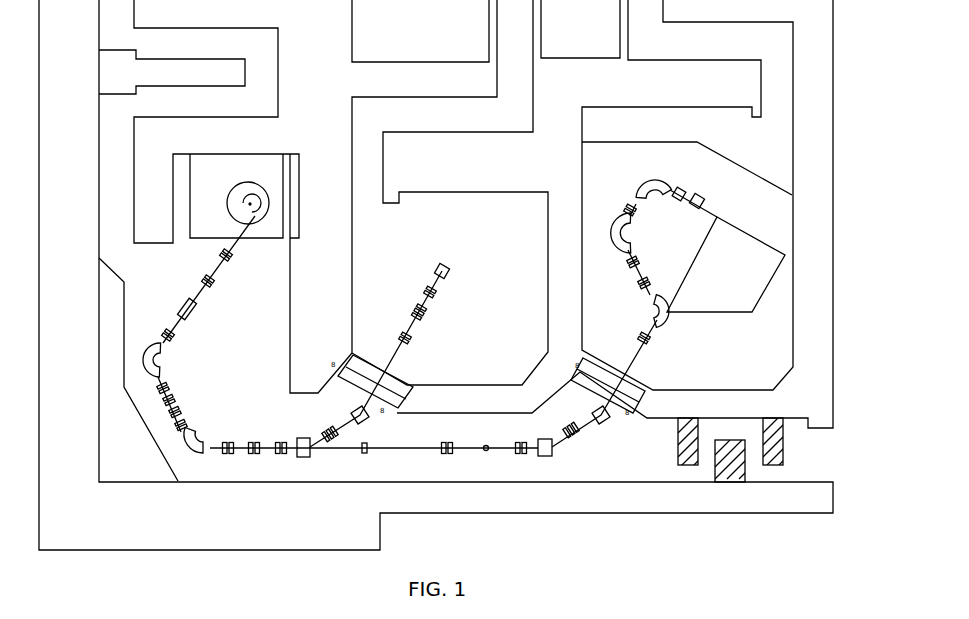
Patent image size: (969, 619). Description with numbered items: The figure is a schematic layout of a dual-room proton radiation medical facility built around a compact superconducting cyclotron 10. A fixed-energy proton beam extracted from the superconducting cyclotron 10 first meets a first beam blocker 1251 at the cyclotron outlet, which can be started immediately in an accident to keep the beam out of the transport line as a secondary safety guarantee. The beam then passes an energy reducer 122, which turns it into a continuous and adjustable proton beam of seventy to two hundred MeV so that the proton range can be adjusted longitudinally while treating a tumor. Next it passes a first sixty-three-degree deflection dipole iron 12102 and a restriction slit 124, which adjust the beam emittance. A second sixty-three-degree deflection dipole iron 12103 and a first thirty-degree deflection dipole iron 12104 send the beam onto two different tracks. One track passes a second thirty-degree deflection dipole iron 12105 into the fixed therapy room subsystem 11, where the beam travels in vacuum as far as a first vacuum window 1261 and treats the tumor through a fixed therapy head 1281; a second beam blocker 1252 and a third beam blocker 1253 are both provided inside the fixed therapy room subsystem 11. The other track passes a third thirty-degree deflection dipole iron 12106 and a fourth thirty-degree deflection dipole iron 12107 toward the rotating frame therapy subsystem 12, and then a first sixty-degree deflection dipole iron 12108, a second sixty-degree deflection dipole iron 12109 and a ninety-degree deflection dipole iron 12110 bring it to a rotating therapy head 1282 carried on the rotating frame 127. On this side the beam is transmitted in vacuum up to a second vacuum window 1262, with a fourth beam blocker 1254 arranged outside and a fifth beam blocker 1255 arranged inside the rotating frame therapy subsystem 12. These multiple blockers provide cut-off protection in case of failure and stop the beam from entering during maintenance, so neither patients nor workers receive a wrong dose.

The superconducting cyclotron 10 is at (240, 188).
The fixed therapy room subsystem 11 is at (443, 200).
The rotating frame therapy subsystem 12 is at (752, 200).
The energy reducer 122 is at (180, 310).
The restriction slit 124 is at (176, 405).
The rotating frame 127 is at (723, 315).
The first beam blocker 1251 is at (216, 281).
The second beam blocker 1252 is at (407, 345).
The third beam blocker 1253 is at (422, 318).
The fourth beam blocker 1254 is at (487, 445).
The fifth beam blocker 1255 is at (633, 362).
The first vacuum window 1261 is at (436, 297).
The second vacuum window 1262 is at (685, 188).
The fixed therapy head 1281 is at (449, 272).
The rotating therapy head 1282 is at (703, 196).
The first 63-degree deflection dipole iron 12102 is at (149, 354).
The second 63-degree deflection dipole iron 12103 is at (209, 456).
The first 30-degree deflection dipole iron 12104 is at (305, 455).
The second 30-degree deflection dipole iron 12105 is at (362, 422).
The third 30-degree deflection dipole iron 12106 is at (546, 455).
The fourth 30-degree deflection dipole iron 12107 is at (601, 423).
The first 60-degree deflection dipole iron 12108 is at (666, 322).
The second 60-degree deflection dipole iron 12109 is at (612, 222).
The 90-degree deflection dipole iron 12110 is at (648, 180).